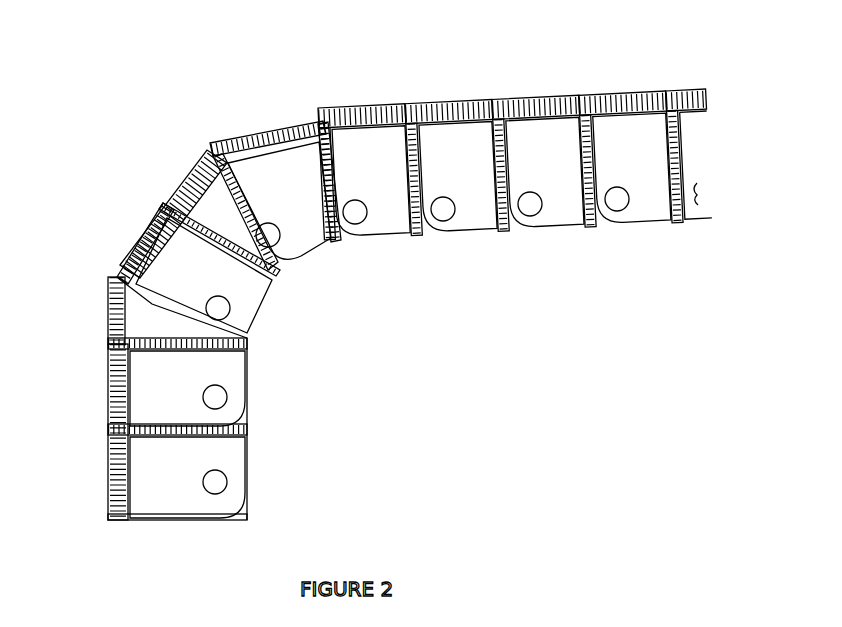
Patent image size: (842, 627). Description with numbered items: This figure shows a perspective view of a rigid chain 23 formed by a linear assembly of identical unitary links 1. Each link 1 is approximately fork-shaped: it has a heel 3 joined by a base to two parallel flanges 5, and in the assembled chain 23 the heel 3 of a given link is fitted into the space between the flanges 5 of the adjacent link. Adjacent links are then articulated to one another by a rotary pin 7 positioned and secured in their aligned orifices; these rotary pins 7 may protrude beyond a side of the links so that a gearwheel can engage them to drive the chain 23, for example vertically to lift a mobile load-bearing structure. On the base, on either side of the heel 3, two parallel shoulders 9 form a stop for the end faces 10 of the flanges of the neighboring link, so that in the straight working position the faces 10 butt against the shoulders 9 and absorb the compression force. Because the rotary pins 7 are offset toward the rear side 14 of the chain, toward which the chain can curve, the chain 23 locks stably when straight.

The unitary link 1 is at (536, 133).
The heel 3 is at (206, 148).
The flanges 5 is at (148, 280).
The rotary pin 7 is at (531, 214).
The shoulders 9 is at (118, 338).
The end faces of the flanges 10 is at (155, 302).
The rear side of the chain 14 is at (337, 246).
The rigid chain 23 is at (140, 131).